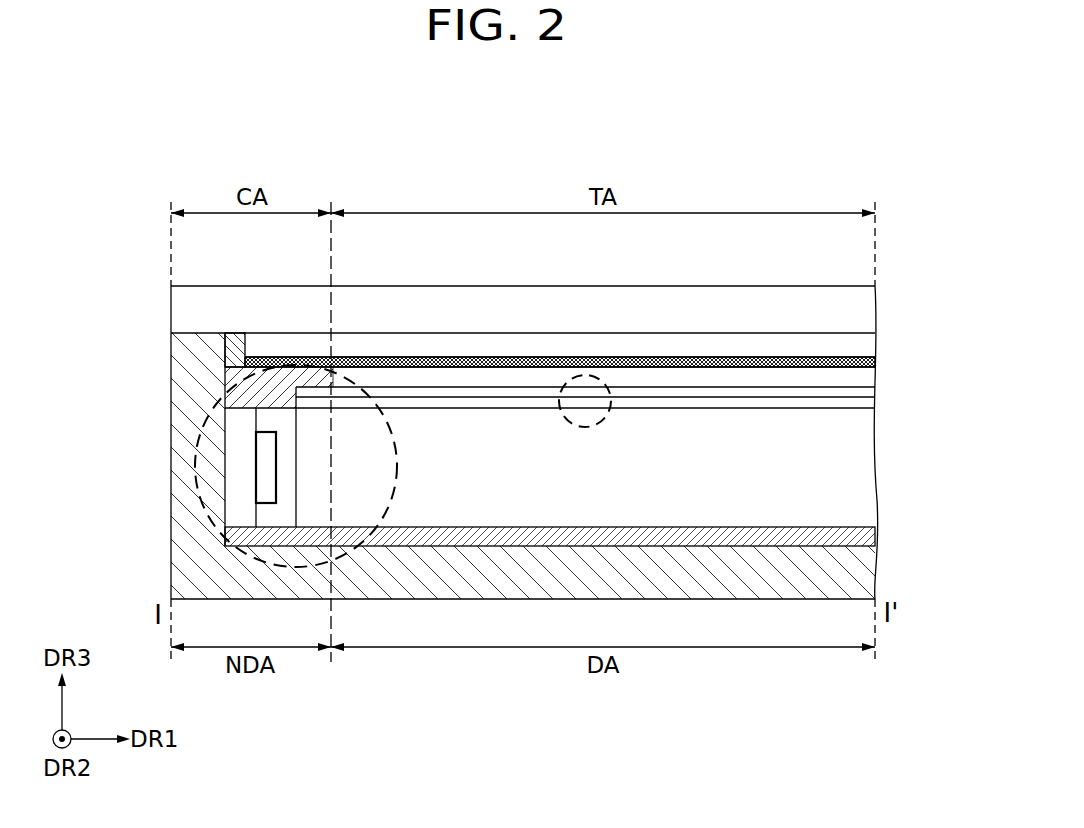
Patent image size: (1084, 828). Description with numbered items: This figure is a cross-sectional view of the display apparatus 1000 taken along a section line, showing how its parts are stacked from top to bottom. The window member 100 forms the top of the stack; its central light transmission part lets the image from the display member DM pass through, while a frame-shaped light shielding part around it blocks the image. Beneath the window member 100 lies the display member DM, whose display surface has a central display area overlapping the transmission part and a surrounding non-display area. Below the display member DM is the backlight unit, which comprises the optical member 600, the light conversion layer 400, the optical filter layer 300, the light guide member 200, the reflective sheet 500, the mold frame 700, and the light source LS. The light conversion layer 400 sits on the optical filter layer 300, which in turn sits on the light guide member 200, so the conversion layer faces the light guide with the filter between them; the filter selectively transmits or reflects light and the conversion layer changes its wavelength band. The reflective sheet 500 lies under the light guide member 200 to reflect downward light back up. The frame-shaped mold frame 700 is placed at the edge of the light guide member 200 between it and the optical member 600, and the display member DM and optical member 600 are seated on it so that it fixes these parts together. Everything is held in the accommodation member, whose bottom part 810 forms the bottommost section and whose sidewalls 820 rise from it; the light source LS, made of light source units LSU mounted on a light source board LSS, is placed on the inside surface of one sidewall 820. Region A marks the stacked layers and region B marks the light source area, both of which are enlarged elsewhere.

The display apparatus 1000 is at (841, 180).
The window member 100 is at (866, 310).
The display member DM is at (866, 345).
The optical member 600 is at (866, 362).
The light conversion layer 400 is at (866, 388).
The optical filter layer 300 is at (866, 402).
The light guide member 200 is at (866, 472).
The reflective sheet 500 is at (866, 535).
The bottom part 810 is at (866, 572).
The sidewalls 820 is at (188, 405).
The mold frame 700 is at (237, 358).
The region B is at (198, 438).
The region A is at (566, 374).
The light source LS is at (159, 467).
The light source units LSU is at (267, 466).
The light source board LSS is at (240, 507).